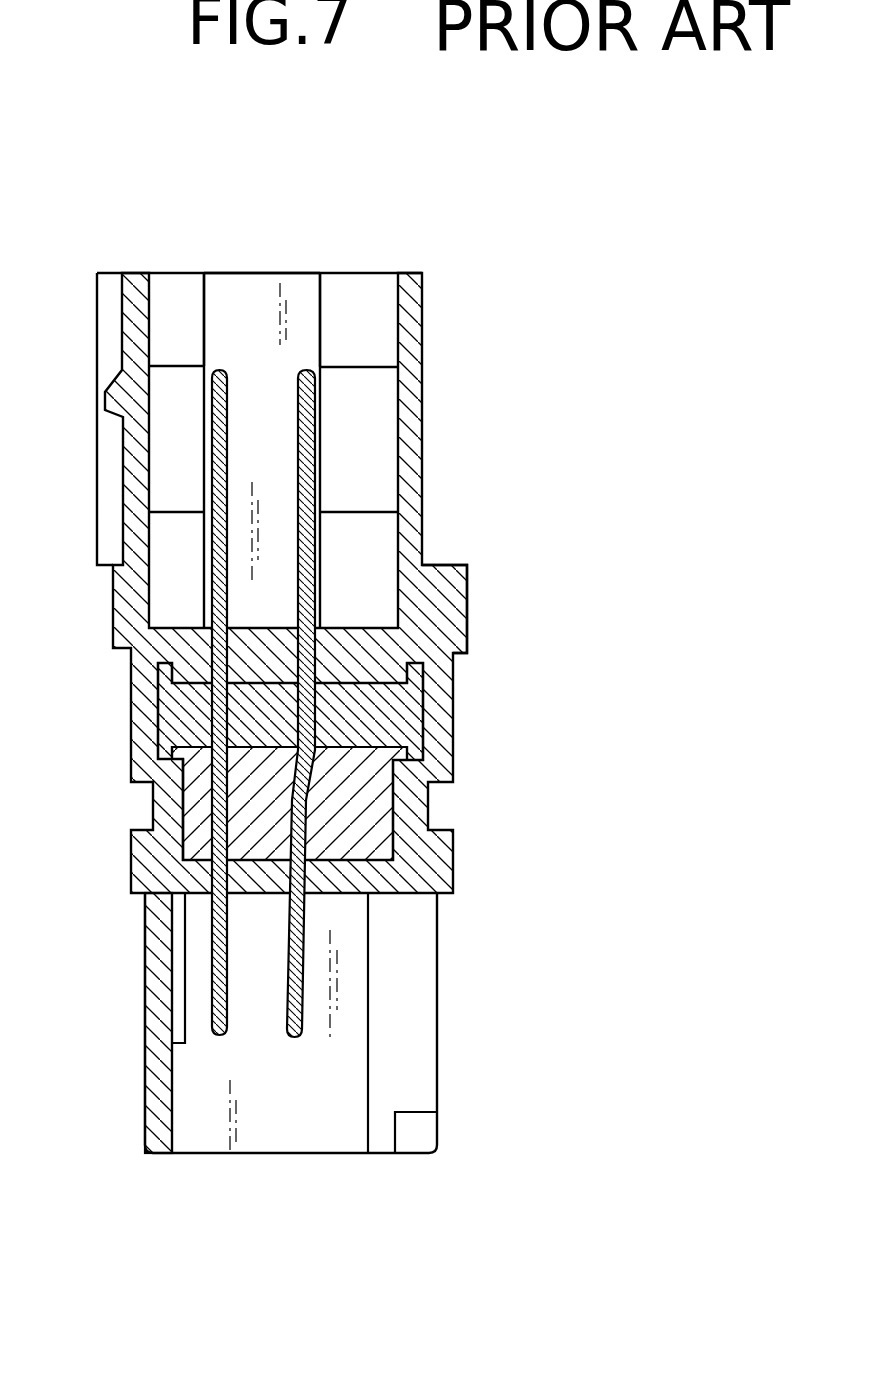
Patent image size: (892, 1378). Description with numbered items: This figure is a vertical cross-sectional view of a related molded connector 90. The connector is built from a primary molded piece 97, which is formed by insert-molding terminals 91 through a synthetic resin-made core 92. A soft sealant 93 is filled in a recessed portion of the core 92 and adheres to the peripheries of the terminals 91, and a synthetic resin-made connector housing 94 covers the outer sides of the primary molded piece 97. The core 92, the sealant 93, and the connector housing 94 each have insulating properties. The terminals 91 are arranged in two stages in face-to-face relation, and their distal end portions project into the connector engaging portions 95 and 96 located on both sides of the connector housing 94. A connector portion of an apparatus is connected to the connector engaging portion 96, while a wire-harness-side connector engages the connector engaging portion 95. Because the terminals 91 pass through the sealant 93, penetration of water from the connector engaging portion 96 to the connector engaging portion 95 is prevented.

The molded connector 90 is at (512, 662).
The terminals 91 is at (322, 492).
The core 92 is at (366, 808).
The sealant 93 is at (388, 718).
The connector housing 94 is at (468, 567).
The connector engaging portion 95 is at (240, 293).
The connector engaging portion 96 is at (280, 1133).
The primary molded piece 97 is at (166, 848).